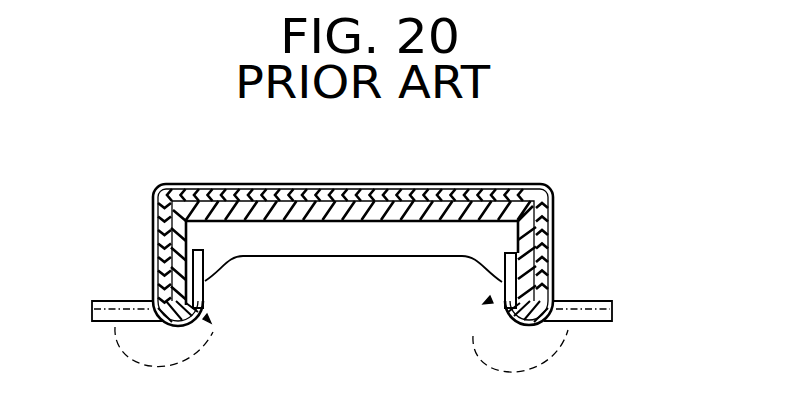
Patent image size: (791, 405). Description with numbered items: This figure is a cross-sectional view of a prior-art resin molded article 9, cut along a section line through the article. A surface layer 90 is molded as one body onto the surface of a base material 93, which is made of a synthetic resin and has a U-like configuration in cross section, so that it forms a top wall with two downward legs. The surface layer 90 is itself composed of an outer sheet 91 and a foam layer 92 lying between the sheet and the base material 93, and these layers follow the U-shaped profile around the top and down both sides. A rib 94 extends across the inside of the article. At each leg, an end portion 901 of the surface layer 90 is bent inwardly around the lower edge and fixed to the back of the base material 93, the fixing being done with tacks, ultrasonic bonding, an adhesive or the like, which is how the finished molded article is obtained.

The resin molded article 9 is at (186, 164).
The surface layer 90 is at (228, 183).
The sheet 91 is at (293, 184).
The foam layer 92 is at (350, 193).
The base material 93 is at (448, 212).
The rib 94 is at (355, 249).
The end portion of the surface layer 901 is at (206, 268).